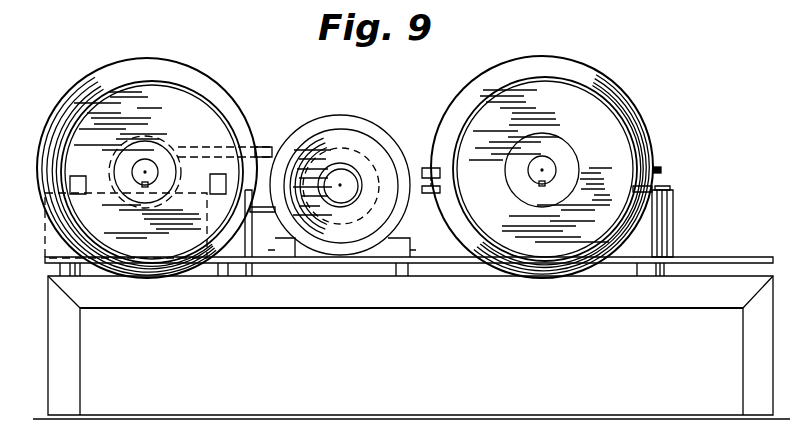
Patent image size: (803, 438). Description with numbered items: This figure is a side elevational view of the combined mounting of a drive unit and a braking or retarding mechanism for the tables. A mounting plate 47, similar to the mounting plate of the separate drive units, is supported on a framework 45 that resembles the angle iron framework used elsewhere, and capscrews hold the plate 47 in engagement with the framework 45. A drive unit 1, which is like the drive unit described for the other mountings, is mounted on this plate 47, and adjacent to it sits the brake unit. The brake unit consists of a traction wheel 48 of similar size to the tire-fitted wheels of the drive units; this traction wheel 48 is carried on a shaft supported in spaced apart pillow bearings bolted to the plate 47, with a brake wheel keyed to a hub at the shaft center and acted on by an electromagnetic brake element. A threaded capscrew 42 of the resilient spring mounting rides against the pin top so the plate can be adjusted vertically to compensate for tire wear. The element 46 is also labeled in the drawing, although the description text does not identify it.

The drive unit 1 is at (187, 51).
The threaded capscrew 42 is at (657, 170).
The framework 45 is at (111, 323).
The base 46 is at (73, 383).
The mounting plate 47 is at (703, 256).
The traction wheel 48 is at (593, 66).